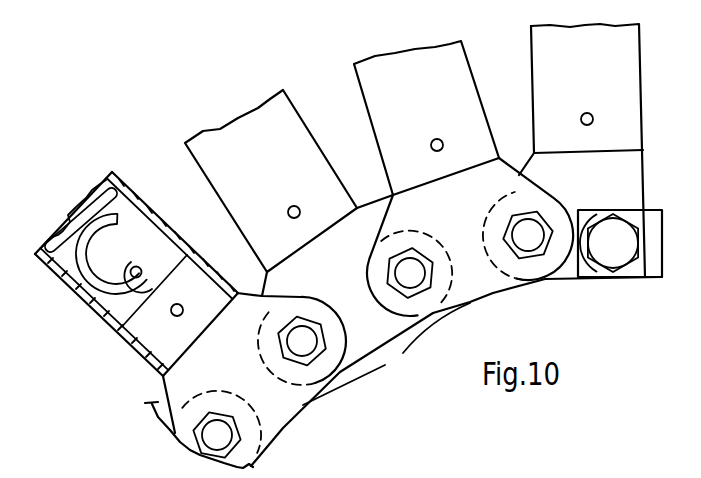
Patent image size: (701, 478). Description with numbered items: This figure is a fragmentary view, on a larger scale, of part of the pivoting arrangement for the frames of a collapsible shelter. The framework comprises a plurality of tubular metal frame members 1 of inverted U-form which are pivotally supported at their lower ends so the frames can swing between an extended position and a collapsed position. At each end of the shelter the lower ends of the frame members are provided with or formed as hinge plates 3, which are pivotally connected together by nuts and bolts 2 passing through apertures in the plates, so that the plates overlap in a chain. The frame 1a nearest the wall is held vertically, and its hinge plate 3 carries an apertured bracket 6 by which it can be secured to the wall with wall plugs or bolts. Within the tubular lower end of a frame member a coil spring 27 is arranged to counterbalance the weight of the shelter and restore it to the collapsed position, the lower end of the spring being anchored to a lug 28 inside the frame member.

The tubular metal frame member 1 is at (213, 179).
The frame nearest the wall 1a is at (536, 105).
The nuts and bolts 2 is at (228, 437).
The hinge plate 3 is at (380, 343).
The apertured bracket 6 is at (656, 213).
The coil spring 27 is at (51, 268).
The lug 28 is at (206, 283).